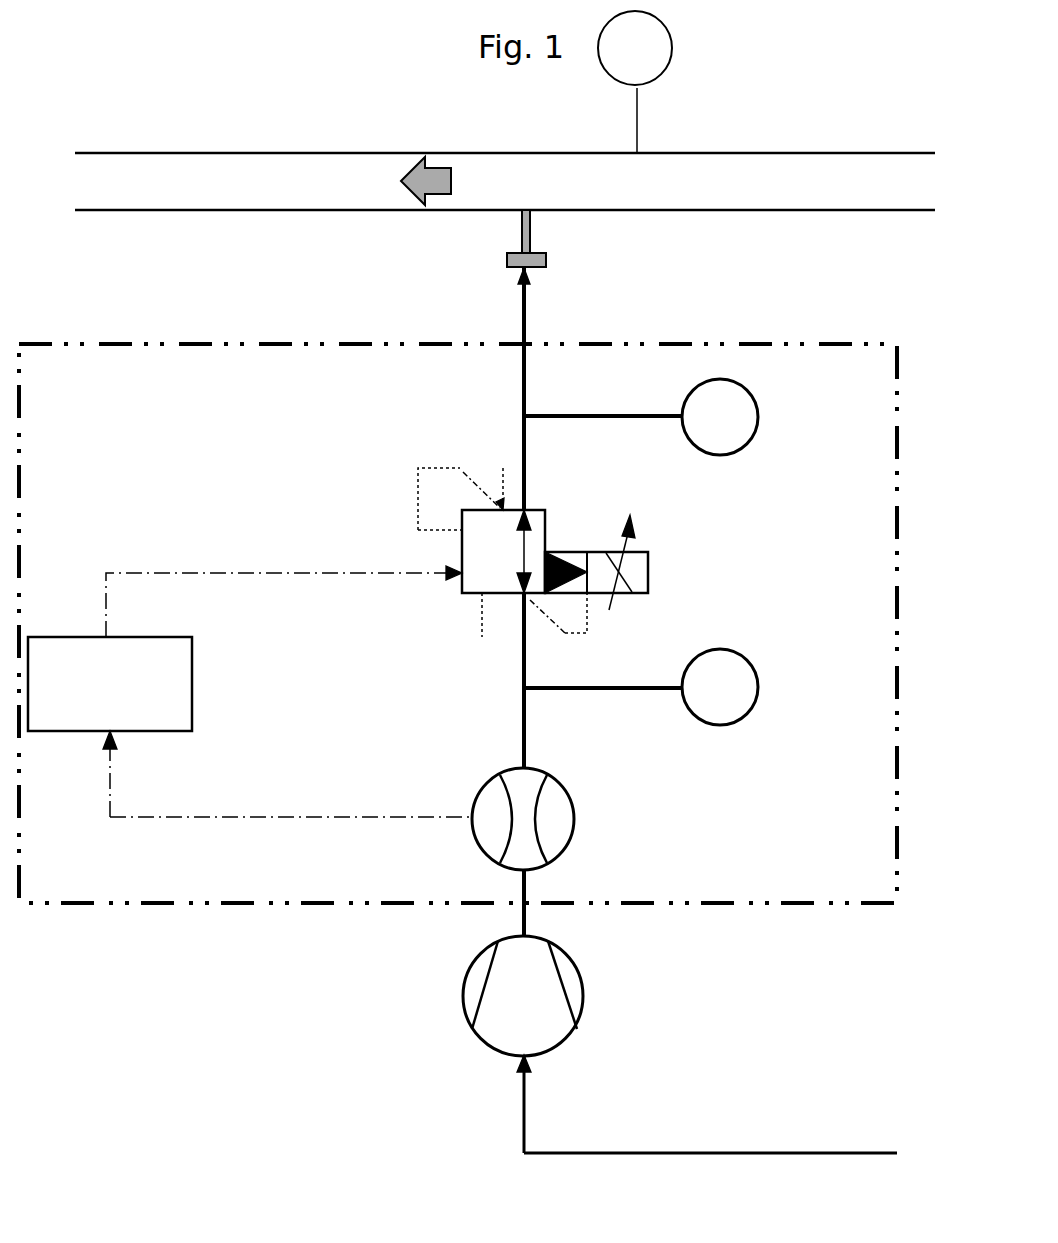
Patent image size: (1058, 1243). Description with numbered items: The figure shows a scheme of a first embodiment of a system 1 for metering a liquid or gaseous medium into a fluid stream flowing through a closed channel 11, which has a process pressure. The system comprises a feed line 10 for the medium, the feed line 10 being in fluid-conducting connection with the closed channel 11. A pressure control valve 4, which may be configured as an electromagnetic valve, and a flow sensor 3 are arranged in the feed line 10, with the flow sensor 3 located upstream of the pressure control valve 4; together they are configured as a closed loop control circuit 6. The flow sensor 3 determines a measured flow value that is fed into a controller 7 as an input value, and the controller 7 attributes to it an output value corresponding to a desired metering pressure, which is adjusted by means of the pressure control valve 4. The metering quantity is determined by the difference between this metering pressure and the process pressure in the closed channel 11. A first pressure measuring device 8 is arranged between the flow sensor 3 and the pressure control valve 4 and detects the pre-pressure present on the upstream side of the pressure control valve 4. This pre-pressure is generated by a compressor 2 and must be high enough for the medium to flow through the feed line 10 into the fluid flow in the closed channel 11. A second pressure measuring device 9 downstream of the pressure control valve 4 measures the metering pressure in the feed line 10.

The system 1 is at (160, 114).
The compressor 2 is at (458, 997).
The flow sensor 3 is at (573, 793).
The pressure control valve 4 is at (640, 565).
The closed loop control circuit 6 is at (104, 558).
The controller 7 is at (81, 722).
The first pressure measuring device 8 is at (750, 692).
The second pressure measuring device 9 is at (750, 422).
The feed line 10 is at (521, 376).
The closed channel 11 is at (838, 174).